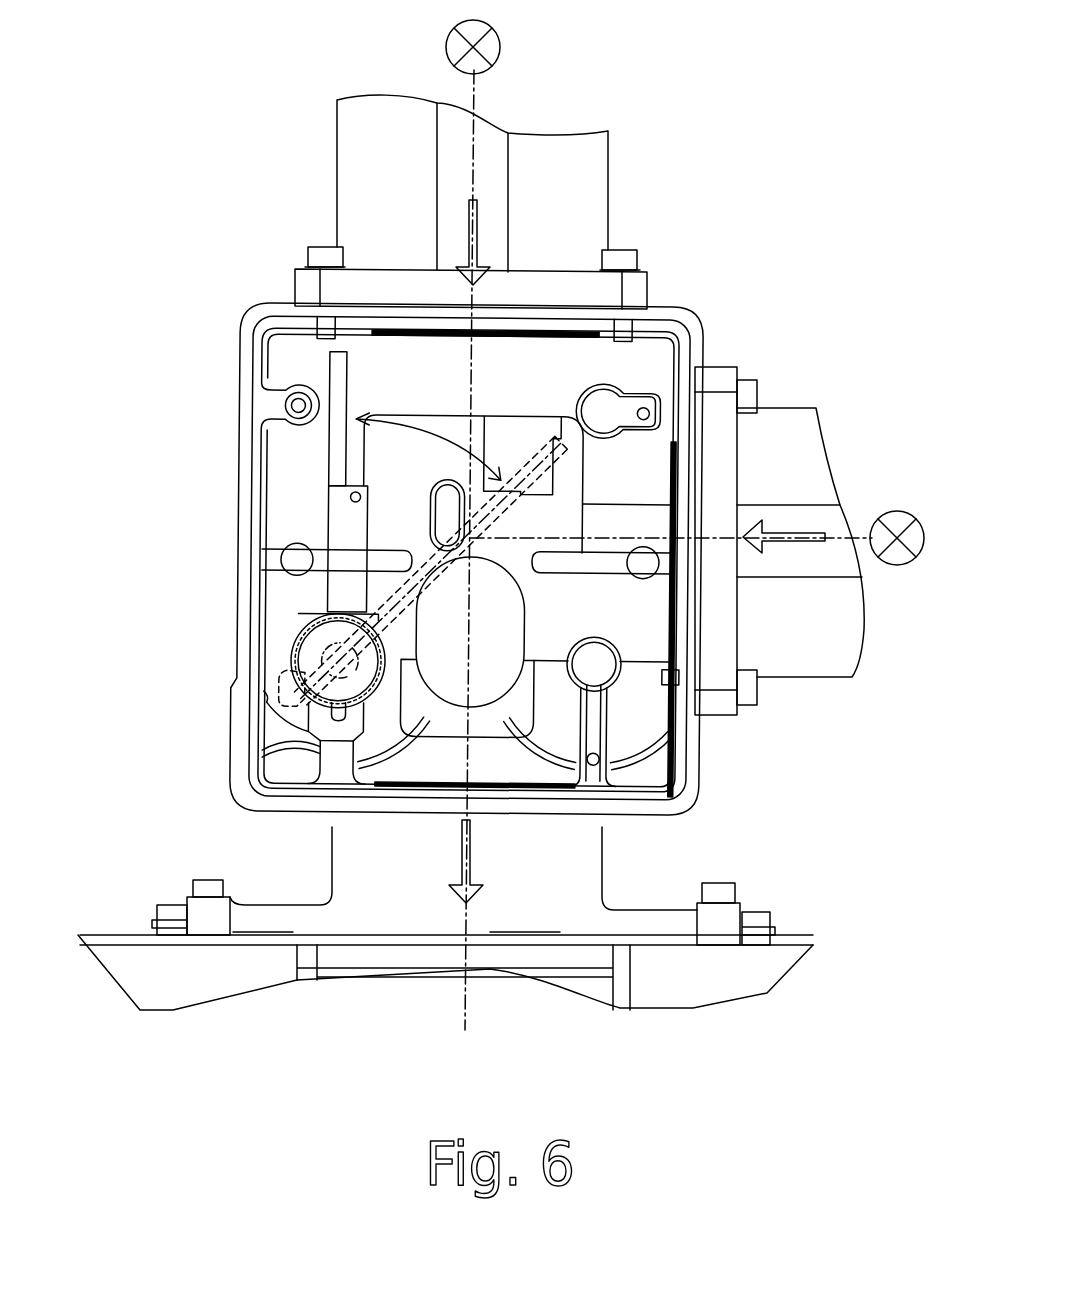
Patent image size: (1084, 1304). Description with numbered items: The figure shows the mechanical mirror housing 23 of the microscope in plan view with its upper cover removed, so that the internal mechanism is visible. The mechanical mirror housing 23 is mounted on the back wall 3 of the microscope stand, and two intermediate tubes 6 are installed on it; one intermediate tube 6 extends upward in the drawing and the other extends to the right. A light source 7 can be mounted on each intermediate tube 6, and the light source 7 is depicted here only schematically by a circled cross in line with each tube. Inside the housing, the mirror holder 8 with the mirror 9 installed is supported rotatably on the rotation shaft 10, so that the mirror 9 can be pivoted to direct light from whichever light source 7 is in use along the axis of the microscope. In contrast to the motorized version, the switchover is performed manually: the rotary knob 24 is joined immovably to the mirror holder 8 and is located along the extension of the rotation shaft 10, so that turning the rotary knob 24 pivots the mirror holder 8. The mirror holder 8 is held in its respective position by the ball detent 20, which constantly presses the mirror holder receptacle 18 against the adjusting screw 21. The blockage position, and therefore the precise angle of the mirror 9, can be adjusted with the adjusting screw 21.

The back wall 3 is at (197, 977).
The intermediate tube 6 is at (577, 187).
The light source 7 is at (490, 43).
The mirror holder 8 is at (345, 535).
The mirror 9 is at (338, 427).
The rotation shaft 10 is at (338, 662).
The mirror holder receptacle 18 is at (320, 728).
The ball detent 20 is at (342, 748).
The adjusting screw 21 is at (267, 695).
The mechanical mirror housing 23 is at (408, 880).
The rotary knob 24 is at (342, 637).